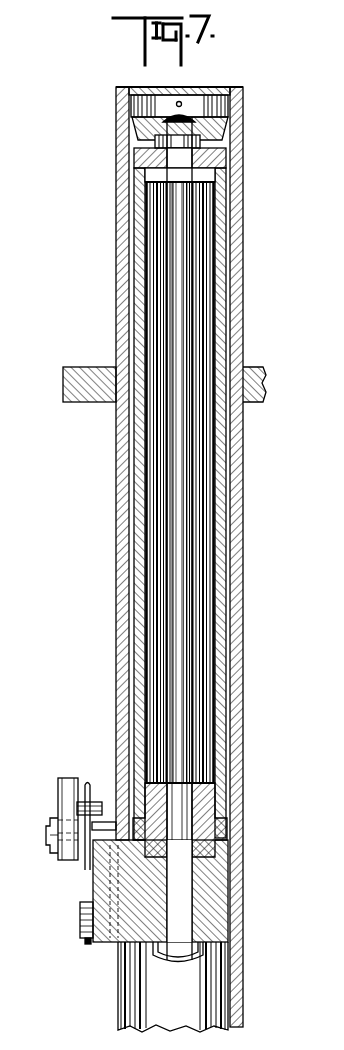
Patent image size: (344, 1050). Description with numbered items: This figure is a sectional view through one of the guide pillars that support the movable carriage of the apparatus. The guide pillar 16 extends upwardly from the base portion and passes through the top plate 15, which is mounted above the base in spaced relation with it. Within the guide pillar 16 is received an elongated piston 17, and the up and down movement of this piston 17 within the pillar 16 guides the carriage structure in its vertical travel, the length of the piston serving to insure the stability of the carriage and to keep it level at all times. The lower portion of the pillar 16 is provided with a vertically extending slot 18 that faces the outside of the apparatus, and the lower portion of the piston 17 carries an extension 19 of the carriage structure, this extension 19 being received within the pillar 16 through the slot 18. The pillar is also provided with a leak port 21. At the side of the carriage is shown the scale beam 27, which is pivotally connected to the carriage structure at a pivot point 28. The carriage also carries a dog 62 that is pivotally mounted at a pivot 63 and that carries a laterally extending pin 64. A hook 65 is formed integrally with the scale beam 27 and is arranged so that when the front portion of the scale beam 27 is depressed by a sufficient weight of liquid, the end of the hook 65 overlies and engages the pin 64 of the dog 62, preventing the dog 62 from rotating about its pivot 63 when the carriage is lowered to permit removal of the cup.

The top plate 15 is at (75, 367).
The guide pillar 16 is at (116, 446).
The elongated piston 17 is at (134, 485).
The vertically extending slot 18 is at (118, 990).
The extension 19 is at (213, 896).
The leak port 21 is at (117, 100).
The scale beam 27 is at (87, 943).
The pivot point 28 is at (80, 930).
The dog 62 is at (63, 778).
The pivot 63 is at (50, 843).
The pin 64 is at (100, 802).
The hook 65 is at (86, 784).